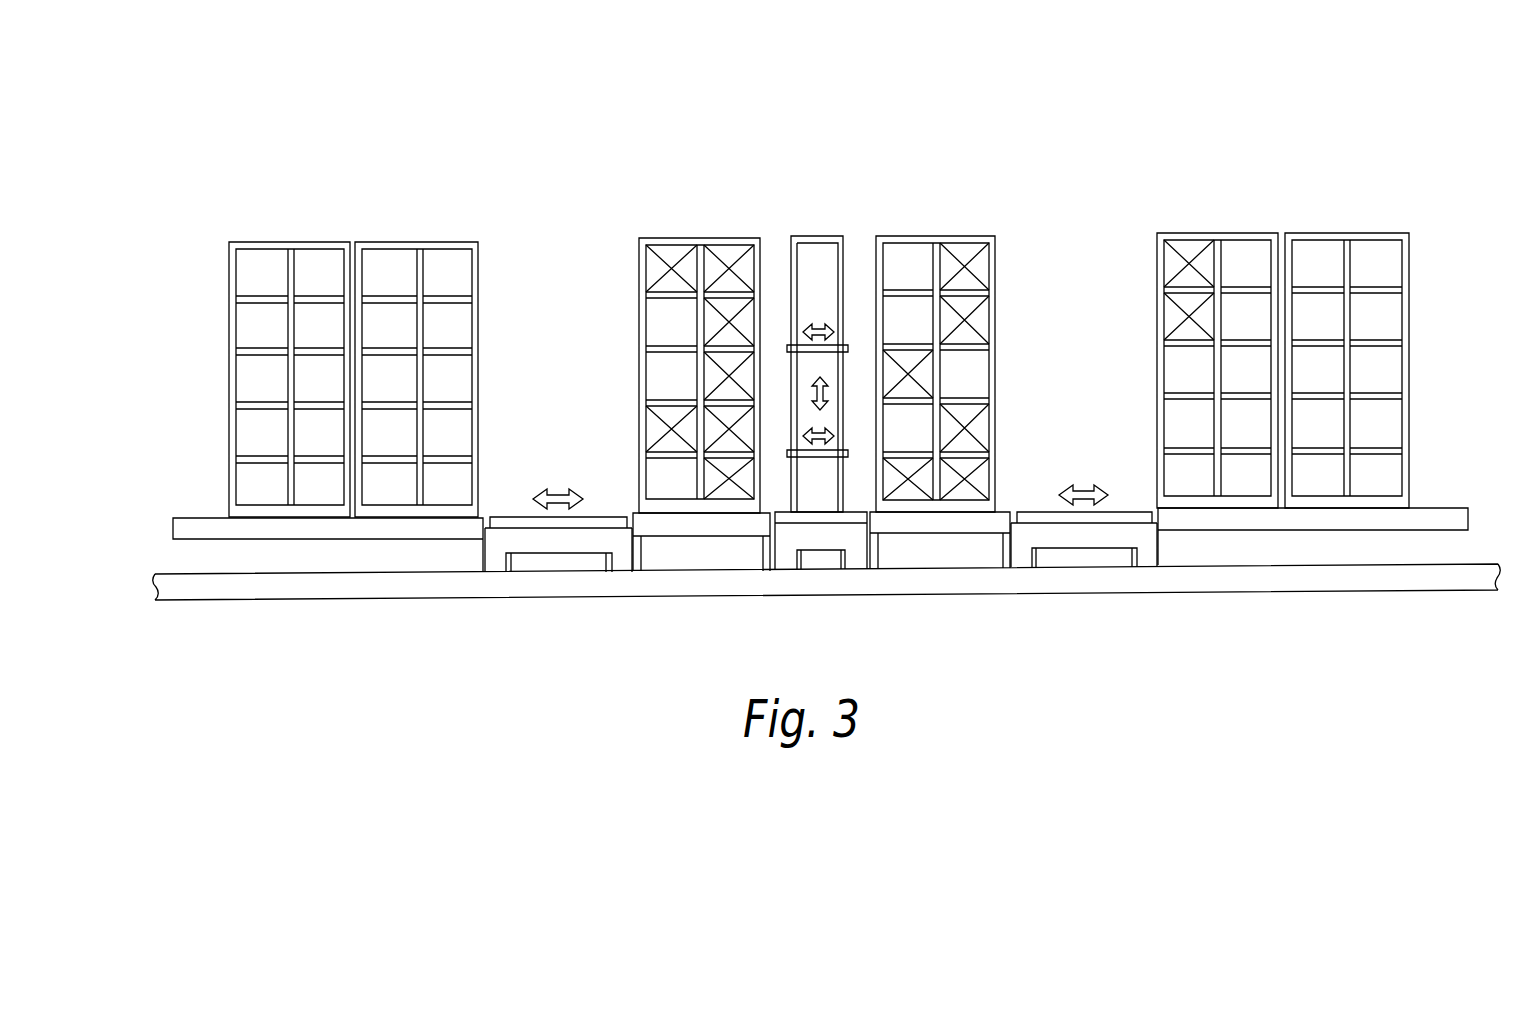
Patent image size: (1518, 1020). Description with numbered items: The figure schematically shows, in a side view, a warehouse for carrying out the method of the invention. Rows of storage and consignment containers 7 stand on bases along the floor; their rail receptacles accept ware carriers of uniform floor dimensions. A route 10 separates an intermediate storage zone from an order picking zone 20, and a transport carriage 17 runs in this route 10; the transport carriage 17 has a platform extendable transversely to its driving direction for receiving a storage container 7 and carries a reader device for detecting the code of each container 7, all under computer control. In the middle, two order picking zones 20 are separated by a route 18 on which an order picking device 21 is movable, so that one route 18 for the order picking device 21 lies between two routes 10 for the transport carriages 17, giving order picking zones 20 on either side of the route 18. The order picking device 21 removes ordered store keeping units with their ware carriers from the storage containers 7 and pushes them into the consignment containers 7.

The storage container 7 is at (819, 304).
The route 10 is at (556, 360).
The transport carriage 17 is at (508, 535).
The route 18 is at (862, 248).
The order picking zone 20 is at (669, 212).
The order picking device 21 is at (813, 237).